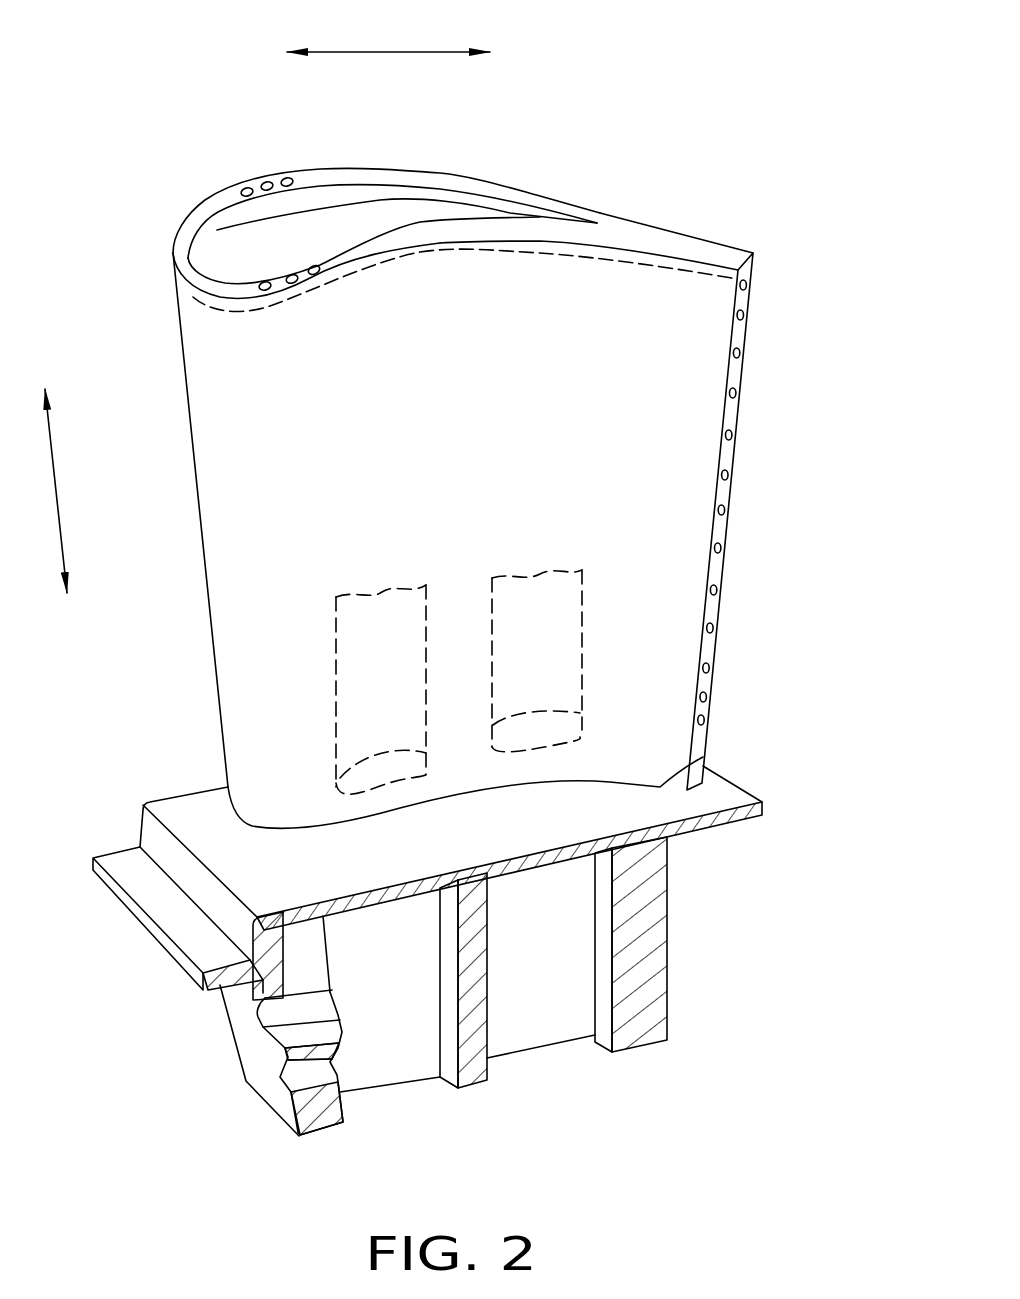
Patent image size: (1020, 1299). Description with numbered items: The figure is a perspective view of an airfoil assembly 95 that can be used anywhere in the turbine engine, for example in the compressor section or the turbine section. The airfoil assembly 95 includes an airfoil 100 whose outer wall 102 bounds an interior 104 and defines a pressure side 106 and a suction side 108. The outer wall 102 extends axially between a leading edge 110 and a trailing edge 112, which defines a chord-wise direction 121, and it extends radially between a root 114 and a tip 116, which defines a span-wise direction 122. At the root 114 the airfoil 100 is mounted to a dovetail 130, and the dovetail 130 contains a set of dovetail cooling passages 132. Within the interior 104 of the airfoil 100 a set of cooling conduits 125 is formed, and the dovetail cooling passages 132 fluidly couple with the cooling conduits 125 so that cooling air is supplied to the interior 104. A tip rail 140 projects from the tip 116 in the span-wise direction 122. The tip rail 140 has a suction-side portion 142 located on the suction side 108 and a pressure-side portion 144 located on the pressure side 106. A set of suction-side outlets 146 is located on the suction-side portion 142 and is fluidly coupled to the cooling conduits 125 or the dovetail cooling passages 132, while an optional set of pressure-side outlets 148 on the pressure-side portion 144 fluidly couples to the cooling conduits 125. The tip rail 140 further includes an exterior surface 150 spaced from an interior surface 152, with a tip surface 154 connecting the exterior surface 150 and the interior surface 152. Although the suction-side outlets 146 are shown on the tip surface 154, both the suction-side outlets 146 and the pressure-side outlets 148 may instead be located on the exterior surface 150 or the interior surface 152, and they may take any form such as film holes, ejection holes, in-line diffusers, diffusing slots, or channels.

The airfoil assembly 95 is at (657, 70).
The airfoil 100 is at (747, 528).
The outer wall 102 is at (250, 566).
The interior 104 is at (332, 655).
The pressure side 106 is at (572, 269).
The suction side 108 is at (484, 174).
The leading edge 110 is at (229, 290).
The trailing edge 112 is at (722, 370).
The root 114 is at (682, 758).
The tip 116 is at (715, 288).
The chord-wise direction 121 is at (360, 44).
The span-wise direction 122 is at (49, 492).
The set of cooling conduits 125 is at (402, 570).
The dovetail 130 is at (236, 1052).
The set of dovetail cooling passages 132 is at (420, 1097).
The tip rail 140 is at (293, 157).
The suction-side portion 142 is at (306, 163).
The pressure-side portion 144 is at (332, 249).
The set of suction-side outlets 146 is at (254, 172).
The set of pressure-side outlets 148 is at (288, 277).
The exterior surface 150 is at (165, 240).
The interior surface 152 is at (210, 221).
The tip surface 154 is at (203, 207).